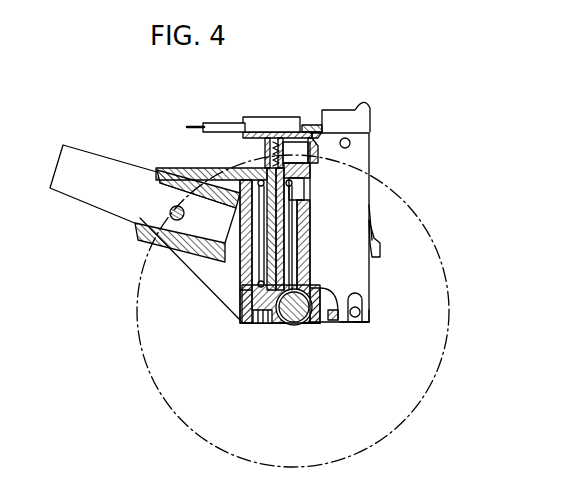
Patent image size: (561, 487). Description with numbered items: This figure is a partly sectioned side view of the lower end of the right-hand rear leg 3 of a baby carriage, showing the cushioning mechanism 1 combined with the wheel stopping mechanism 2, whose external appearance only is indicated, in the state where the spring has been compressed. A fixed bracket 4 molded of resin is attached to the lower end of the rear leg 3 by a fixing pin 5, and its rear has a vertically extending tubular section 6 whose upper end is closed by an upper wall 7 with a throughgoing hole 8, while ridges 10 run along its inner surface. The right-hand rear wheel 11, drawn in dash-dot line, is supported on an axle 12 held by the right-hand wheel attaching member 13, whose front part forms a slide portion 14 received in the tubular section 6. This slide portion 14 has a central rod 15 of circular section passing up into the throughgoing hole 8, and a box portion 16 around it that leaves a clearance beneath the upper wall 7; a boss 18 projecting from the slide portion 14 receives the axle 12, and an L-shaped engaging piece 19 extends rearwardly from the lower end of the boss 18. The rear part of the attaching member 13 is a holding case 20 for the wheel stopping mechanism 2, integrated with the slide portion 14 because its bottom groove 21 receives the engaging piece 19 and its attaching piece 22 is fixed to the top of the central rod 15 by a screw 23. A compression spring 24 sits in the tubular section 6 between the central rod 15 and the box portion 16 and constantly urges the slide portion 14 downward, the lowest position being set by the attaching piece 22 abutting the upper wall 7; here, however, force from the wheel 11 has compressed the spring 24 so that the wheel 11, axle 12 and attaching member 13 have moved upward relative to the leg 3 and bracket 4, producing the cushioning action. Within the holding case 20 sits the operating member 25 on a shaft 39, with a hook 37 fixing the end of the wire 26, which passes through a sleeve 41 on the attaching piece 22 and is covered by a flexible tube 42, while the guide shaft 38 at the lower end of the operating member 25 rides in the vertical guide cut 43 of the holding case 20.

The cushioning mechanism 1 is at (243, 335).
The wheel stopping mechanism 2 is at (380, 310).
The right-hand rear leg 3 is at (84, 146).
The fixed bracket 4 is at (135, 238).
The fixing pin 5 is at (170, 215).
The tubular section 6 is at (240, 282).
The upper wall 7 is at (262, 167).
The throughgoing hole 8 is at (267, 166).
The ridges 10 is at (256, 324).
The right-hand rear wheel 11 is at (442, 358).
The axle 12 is at (264, 324).
The right-hand wheel attaching member 13 is at (306, 325).
The slide portion 14 is at (243, 304).
The central rod 15 is at (305, 205).
The box portion 16 is at (312, 258).
The boss 18 is at (292, 324).
The L-shaped engaging piece 19 is at (322, 324).
The holding case 20 is at (360, 212).
The groove 21 is at (336, 320).
The attaching piece 22 is at (308, 125).
The screw 23 is at (280, 135).
The compression spring 24 is at (305, 188).
The operating member 25 is at (345, 109).
The wire 26 is at (190, 126).
The hook 37 is at (382, 247).
The guide shaft 38 is at (375, 322).
The shaft 39 is at (350, 141).
The sleeve 41 is at (250, 117).
The flexible tube 42 is at (208, 122).
The guide cut 43 is at (365, 290).